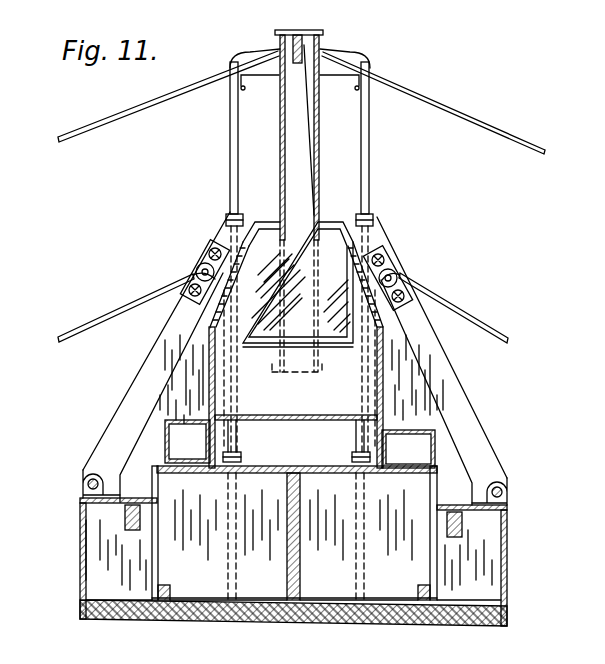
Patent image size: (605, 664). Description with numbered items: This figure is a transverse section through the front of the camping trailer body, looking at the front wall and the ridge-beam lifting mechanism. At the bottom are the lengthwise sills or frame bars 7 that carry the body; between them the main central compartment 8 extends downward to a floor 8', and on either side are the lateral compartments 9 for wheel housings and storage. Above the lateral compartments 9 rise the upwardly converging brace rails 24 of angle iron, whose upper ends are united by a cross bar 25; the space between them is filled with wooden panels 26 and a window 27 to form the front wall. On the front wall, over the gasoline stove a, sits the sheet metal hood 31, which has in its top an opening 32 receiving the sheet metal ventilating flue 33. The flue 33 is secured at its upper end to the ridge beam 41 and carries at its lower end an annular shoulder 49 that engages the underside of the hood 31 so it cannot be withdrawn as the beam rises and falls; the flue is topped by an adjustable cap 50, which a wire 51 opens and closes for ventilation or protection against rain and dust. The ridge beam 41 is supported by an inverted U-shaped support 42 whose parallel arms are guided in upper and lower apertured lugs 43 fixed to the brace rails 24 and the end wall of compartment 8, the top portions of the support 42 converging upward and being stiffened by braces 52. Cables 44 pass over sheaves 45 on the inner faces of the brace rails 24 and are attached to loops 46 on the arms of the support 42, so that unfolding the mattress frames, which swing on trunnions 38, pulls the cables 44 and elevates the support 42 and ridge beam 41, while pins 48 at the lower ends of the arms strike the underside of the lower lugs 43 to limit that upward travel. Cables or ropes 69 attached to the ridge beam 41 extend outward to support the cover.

The sills or frame bars 7 is at (125, 520).
The main central compartment 8 is at (294, 560).
The floor 8' is at (368, 561).
The lateral compartments 9 is at (80, 520).
The brace rails 24 is at (152, 350).
The cross bar 25 is at (331, 211).
The wooden panels 26 is at (172, 392).
The window 27 is at (261, 336).
The sheet metal hood 31 is at (382, 393).
The opening 32 is at (279, 214).
The ventilating flue 33 is at (319, 149).
The trunnions 38 is at (88, 484).
The ridge beam 41 is at (306, 48).
The inverted U-shaped supports 42 is at (232, 156).
The apertured lugs 43 is at (228, 216).
The cables 44 is at (114, 311).
The sheaves 45 is at (200, 262).
The loops 46 is at (213, 279).
The pins 48 is at (241, 457).
The annular shoulder 49 is at (320, 385).
The cap plate 50 is at (306, 36).
The wire 51 is at (312, 124).
The braces 52 is at (338, 73).
The cables or ropes 69 is at (124, 113).
The gasoline stove a is at (296, 416).